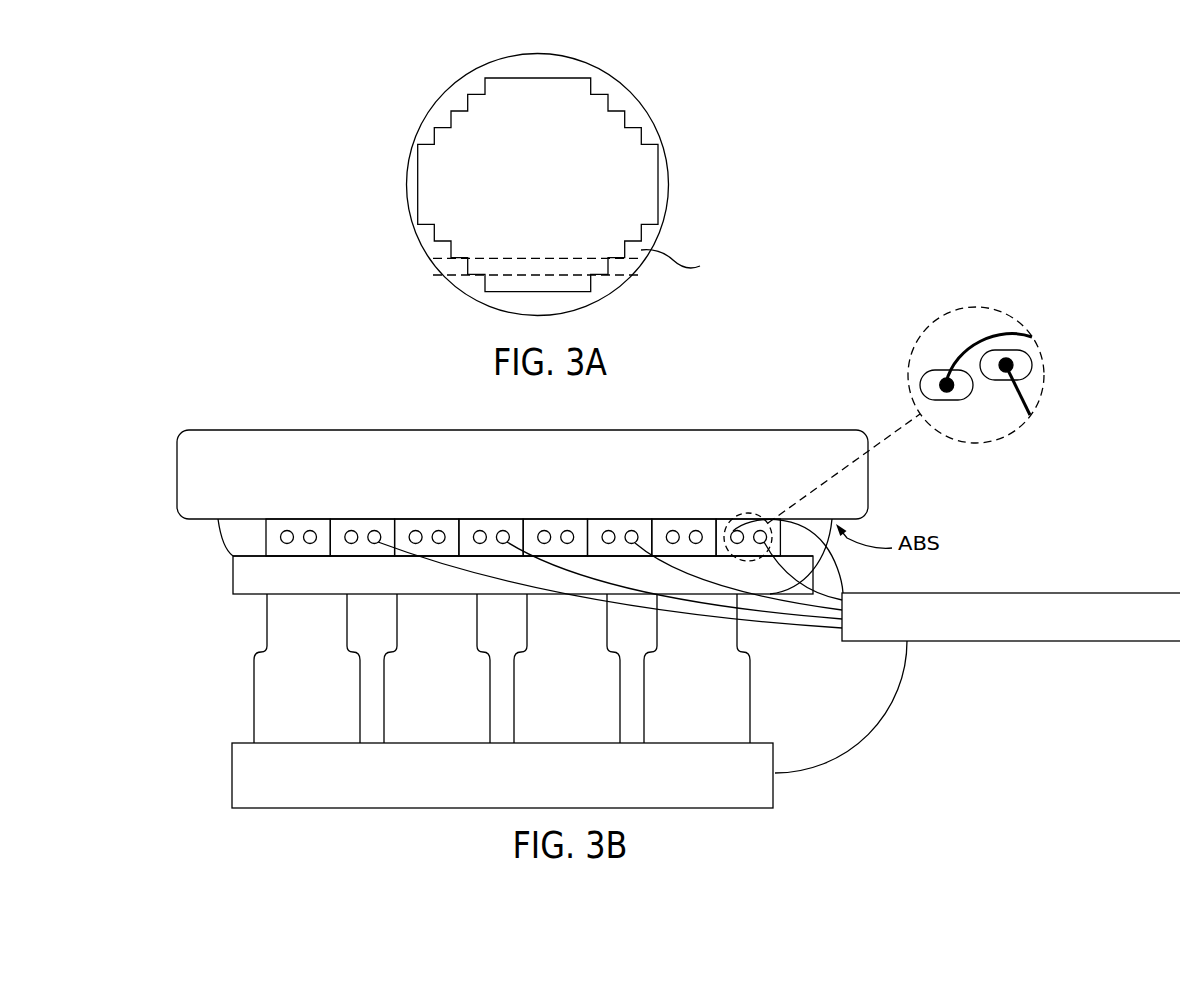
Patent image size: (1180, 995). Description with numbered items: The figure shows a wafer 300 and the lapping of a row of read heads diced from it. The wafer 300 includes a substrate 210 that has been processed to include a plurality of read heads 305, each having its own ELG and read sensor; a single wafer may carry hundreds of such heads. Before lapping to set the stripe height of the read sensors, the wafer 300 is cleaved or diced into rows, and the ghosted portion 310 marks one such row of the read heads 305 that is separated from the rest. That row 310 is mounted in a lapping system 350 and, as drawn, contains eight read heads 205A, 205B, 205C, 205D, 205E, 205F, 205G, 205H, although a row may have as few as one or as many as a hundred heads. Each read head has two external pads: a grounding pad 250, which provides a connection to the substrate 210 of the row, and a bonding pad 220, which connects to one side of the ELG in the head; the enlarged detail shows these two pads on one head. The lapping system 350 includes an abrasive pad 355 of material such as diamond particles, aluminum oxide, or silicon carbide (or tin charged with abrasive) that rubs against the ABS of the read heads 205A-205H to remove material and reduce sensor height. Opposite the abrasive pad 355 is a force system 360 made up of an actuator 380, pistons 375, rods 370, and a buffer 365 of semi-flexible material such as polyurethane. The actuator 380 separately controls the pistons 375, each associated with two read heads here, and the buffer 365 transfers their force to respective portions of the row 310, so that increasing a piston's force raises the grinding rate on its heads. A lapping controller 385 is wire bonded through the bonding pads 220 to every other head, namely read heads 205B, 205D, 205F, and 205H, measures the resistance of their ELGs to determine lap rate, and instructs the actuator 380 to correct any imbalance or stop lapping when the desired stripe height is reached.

In FIG. 3A, the wafer 300 is at (685, 94).
In FIG. 3A, the read heads 305 is at (524, 127).
In FIG. 3A, the row of read heads 310 is at (555, 258).
In FIG. 3B, the row of read heads 310 is at (220, 533).
In FIG. 3A, the substrate 210 is at (689, 264).
In FIG. 3B, the read head 205A is at (266, 517).
In FIG. 3B, the read head 205B is at (395, 517).
In FIG. 3B, the read head 205C is at (459, 517).
In FIG. 3B, the read head 205D is at (459, 517).
In FIG. 3B, the read head 205E is at (588, 517).
In FIG. 3B, the read head 205F is at (652, 517).
In FIG. 3B, the read head 205G is at (652, 517).
In FIG. 3B, the read head 205H is at (716, 517).
In FIG. 3B, the abrasive pad 355 is at (600, 463).
In FIG. 3B, the buffer 365 is at (368, 587).
In FIG. 3B, the rods 370 is at (290, 641).
In FIG. 3B, the pistons 375 is at (290, 691).
In FIG. 3B, the actuator 380 is at (600, 787).
In FIG. 3B, the lapping controller 385 is at (1135, 628).
In FIG. 3B, the force system 360 is at (221, 808).
In FIG. 3B, the lapping system 350 is at (990, 778).
In FIG. 3B, the grounding pad 250 is at (922, 376).
In FIG. 3B, the bonding pad 220 is at (1030, 353).